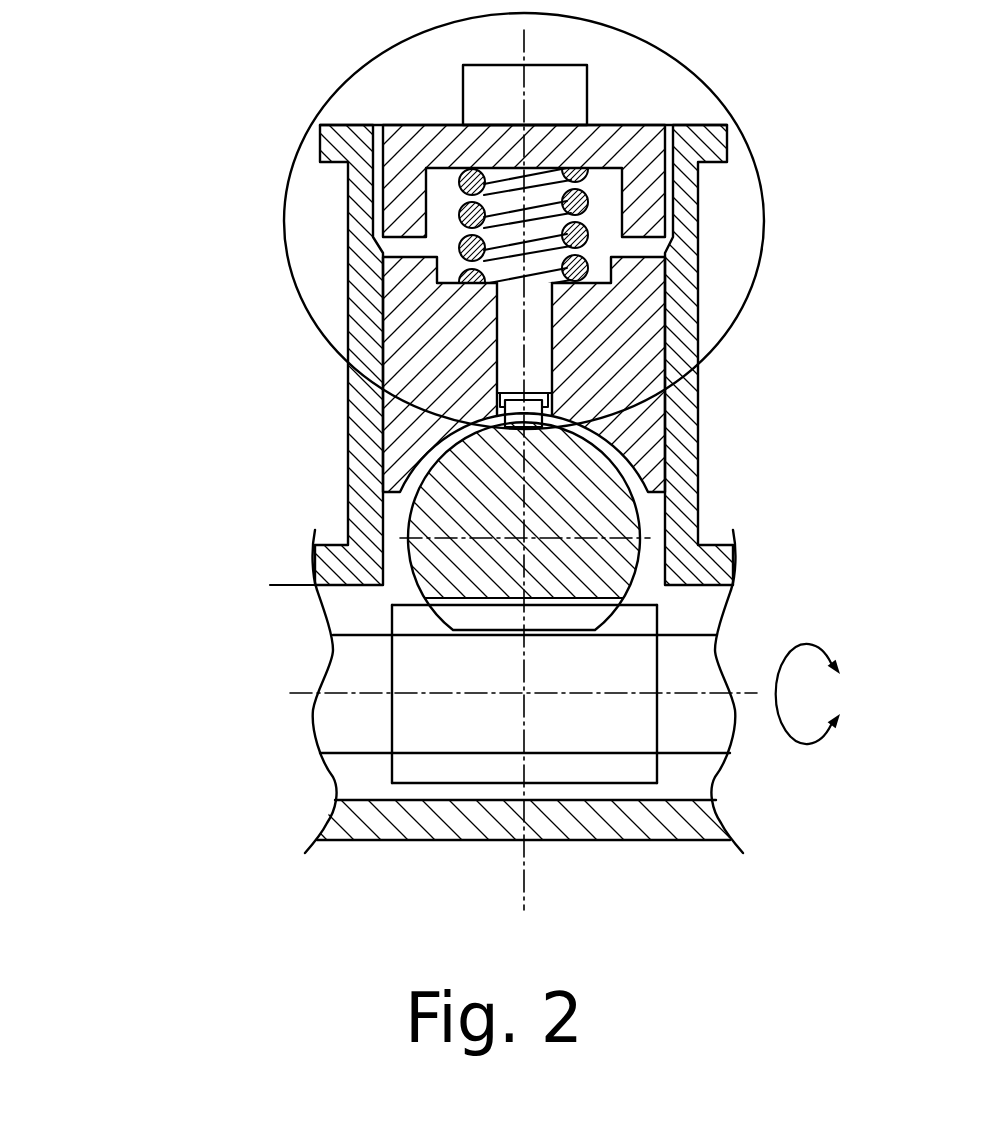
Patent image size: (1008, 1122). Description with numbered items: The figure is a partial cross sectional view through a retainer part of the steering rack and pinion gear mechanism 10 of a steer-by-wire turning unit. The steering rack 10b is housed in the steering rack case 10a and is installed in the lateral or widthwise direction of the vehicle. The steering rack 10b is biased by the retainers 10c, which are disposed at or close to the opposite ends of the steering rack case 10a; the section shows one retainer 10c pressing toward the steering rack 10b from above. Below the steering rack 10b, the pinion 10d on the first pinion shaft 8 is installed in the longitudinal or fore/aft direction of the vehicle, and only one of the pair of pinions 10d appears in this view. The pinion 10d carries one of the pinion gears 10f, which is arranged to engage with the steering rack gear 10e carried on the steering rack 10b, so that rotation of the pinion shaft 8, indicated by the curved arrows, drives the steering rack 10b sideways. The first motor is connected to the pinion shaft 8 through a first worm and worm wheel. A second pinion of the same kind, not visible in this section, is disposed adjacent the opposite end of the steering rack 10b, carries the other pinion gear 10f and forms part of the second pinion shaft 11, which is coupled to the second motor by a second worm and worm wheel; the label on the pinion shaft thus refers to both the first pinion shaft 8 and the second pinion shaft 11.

The steering rack and pinion gear mechanism 10 is at (744, 440).
The steering rack case 10a is at (688, 533).
The steering rack 10b is at (409, 520).
The retainers 10c is at (287, 242).
The pinion 10d is at (682, 620).
The steering rack gear 10e is at (480, 620).
The pinion gear 10f is at (643, 765).
The right pinion shaft 8 is at (444, 691).
The left pinion shaft 11 is at (413, 683).